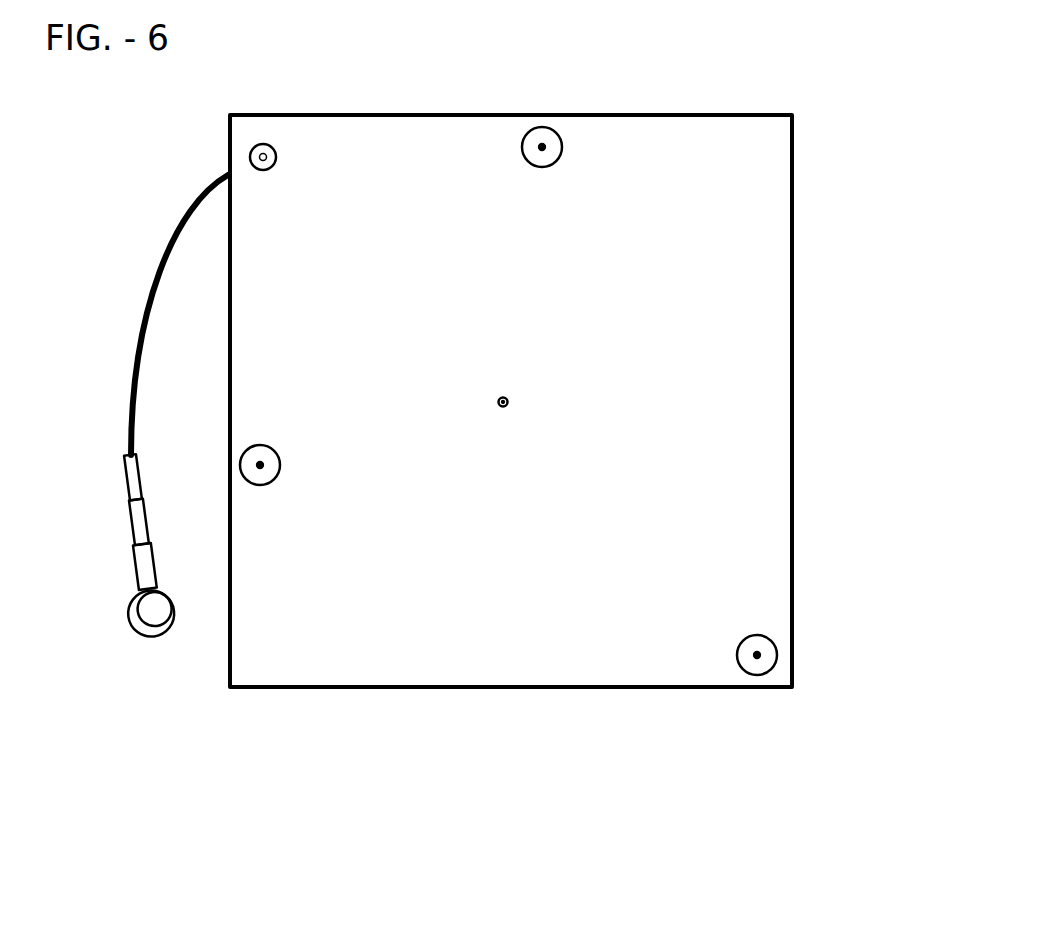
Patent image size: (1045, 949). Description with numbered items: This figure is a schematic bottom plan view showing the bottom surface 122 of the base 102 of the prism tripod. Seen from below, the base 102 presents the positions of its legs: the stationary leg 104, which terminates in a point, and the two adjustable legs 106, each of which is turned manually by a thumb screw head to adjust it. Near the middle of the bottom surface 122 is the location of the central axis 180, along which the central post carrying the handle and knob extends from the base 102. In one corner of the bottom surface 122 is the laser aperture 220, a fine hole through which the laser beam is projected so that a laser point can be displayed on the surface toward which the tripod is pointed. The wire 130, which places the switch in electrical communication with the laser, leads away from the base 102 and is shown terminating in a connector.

The base 102 is at (703, 493).
The stationary leg 104 is at (777, 634).
The adjustable legs 106 is at (558, 128).
The bottom surface 122 is at (558, 620).
The wire 130 is at (153, 266).
The central axis 180 is at (494, 412).
The laser aperture 220 is at (264, 145).